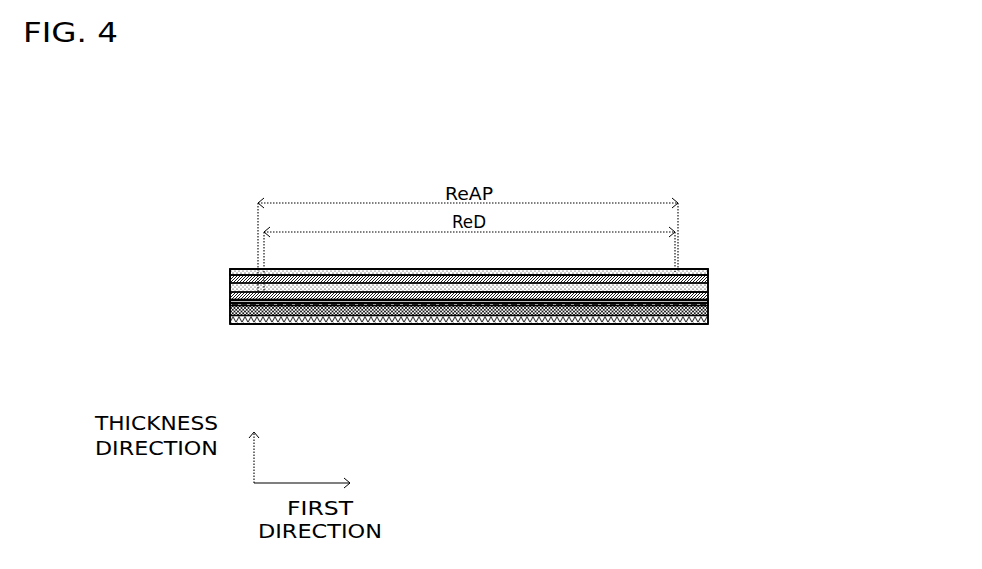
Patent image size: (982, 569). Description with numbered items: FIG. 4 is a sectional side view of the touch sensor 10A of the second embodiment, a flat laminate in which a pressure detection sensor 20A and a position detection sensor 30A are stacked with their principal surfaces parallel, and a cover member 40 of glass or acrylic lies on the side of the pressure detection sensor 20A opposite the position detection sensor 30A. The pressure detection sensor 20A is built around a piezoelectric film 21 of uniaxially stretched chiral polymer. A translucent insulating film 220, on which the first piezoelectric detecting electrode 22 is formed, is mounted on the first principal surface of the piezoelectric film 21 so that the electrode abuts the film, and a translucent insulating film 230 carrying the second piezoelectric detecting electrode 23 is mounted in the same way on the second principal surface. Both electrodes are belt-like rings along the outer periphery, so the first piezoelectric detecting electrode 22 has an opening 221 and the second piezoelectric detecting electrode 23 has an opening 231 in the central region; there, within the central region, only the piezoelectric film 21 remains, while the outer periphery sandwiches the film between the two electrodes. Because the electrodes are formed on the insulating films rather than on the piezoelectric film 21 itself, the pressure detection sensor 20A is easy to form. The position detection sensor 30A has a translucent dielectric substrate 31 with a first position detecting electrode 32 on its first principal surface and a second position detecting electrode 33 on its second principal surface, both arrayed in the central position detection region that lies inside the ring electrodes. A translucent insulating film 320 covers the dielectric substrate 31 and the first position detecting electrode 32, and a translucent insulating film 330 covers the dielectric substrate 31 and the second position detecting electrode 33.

The touch sensor 10A is at (756, 192).
The pressure detection sensor 20A is at (752, 257).
The position detection sensor 30A is at (178, 261).
The piezoelectric film 21 is at (709, 288).
The first piezoelectric detecting electrode 22 is at (709, 279).
The second piezoelectric detecting electrode 23 is at (709, 297).
The insulating film 220 is at (673, 276).
The opening 221 is at (584, 271).
The insulating film 230 is at (709, 308).
The opening 231 is at (624, 285).
The cover member 40 is at (526, 272).
The dielectric substrate 31 is at (233, 313).
The first position detecting electrode 32 is at (250, 302).
The insulating film 320 is at (252, 289).
The second position detecting electrode 33 is at (245, 321).
The insulating film 330 is at (258, 323).